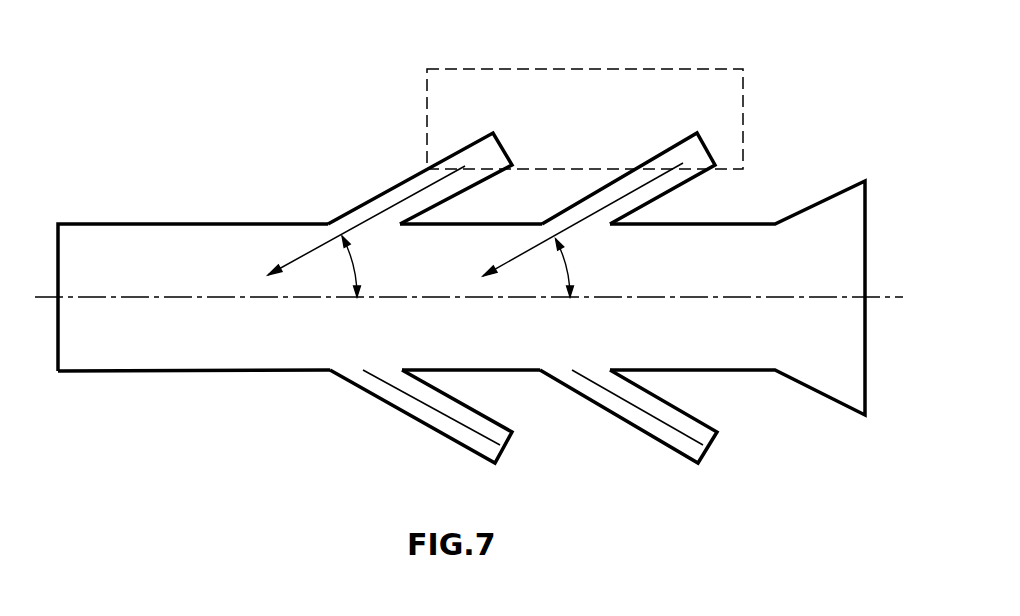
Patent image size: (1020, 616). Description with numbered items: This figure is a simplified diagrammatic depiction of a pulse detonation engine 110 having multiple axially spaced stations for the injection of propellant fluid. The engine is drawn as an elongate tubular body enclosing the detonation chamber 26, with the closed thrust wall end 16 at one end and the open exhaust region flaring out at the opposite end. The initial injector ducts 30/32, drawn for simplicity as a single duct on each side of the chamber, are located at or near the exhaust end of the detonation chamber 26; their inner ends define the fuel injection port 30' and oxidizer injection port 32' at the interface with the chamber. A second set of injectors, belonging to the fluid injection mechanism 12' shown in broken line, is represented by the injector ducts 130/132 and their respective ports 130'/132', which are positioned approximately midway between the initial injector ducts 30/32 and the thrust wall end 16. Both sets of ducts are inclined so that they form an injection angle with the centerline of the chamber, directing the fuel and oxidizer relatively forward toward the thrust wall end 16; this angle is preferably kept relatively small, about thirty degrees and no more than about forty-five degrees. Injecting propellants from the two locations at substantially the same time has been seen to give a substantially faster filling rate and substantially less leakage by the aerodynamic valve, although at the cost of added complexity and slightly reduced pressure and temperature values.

The pulse detonation engine 110 is at (168, 120).
The thrust wall end 16 is at (55, 233).
The detonation chamber 26 is at (175, 346).
The fluid injection mechanism 12' is at (585, 92).
The injector duct 130 is at (387, 305).
The injector duct 132 is at (387, 305).
The fuel injection duct 30 is at (624, 305).
The oxidizer injection duct 32 is at (624, 305).
The injector port 130' is at (422, 355).
The injector port 132' is at (318, 382).
The fuel injection port 30' is at (622, 355).
The oxidizer injection port 32' is at (533, 382).